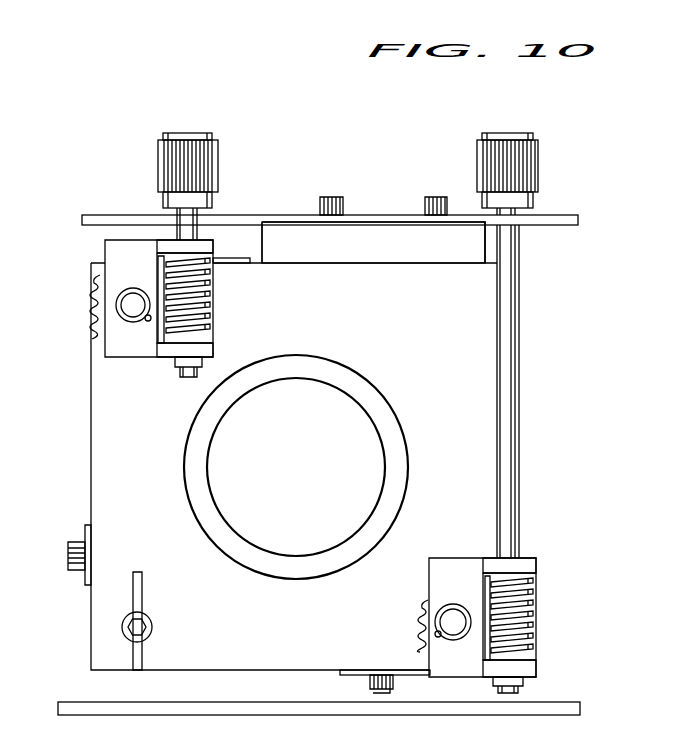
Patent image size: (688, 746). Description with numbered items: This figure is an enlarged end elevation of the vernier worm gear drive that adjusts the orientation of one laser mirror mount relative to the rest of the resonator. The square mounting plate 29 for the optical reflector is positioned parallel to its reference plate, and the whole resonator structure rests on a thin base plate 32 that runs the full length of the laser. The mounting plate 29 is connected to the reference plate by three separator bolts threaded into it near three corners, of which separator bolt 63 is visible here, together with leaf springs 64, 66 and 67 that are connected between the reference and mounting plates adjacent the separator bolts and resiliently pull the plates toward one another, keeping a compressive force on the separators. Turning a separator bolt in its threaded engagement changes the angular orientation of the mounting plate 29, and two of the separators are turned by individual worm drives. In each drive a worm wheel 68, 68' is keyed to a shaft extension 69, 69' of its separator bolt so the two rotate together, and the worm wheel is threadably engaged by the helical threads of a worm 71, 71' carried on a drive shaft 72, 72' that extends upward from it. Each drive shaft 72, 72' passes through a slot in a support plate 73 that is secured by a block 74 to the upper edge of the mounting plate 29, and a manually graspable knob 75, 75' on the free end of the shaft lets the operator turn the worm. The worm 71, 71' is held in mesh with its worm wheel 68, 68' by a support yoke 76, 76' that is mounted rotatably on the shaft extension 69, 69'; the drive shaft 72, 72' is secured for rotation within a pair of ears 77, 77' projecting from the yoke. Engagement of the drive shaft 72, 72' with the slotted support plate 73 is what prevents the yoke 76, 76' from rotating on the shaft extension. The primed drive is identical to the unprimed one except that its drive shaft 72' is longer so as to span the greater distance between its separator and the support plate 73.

The mounting plate 29 is at (484, 469).
The base plate 32 is at (332, 705).
The separator bolt 63 is at (145, 627).
The leaf spring 64 is at (232, 258).
The leaf spring 66 is at (352, 670).
The leaf spring 67 is at (68, 545).
The worm wheel 68 is at (72, 307).
The worm wheel 68' is at (399, 626).
The shaft extension 69 is at (98, 294).
The shaft extension 69' is at (428, 615).
The worm 71 is at (208, 295).
The worm 71' is at (542, 615).
The drive shaft 72 is at (154, 213).
The drive shaft 72' is at (531, 383).
The support plate 73 is at (394, 218).
The block 74 is at (426, 255).
The knob 75 is at (211, 170).
The knob 75' is at (532, 170).
The support yoke 76 is at (159, 318).
The support yoke 76' is at (482, 611).
The ears 77 is at (213, 272).
The ears 77' is at (538, 614).